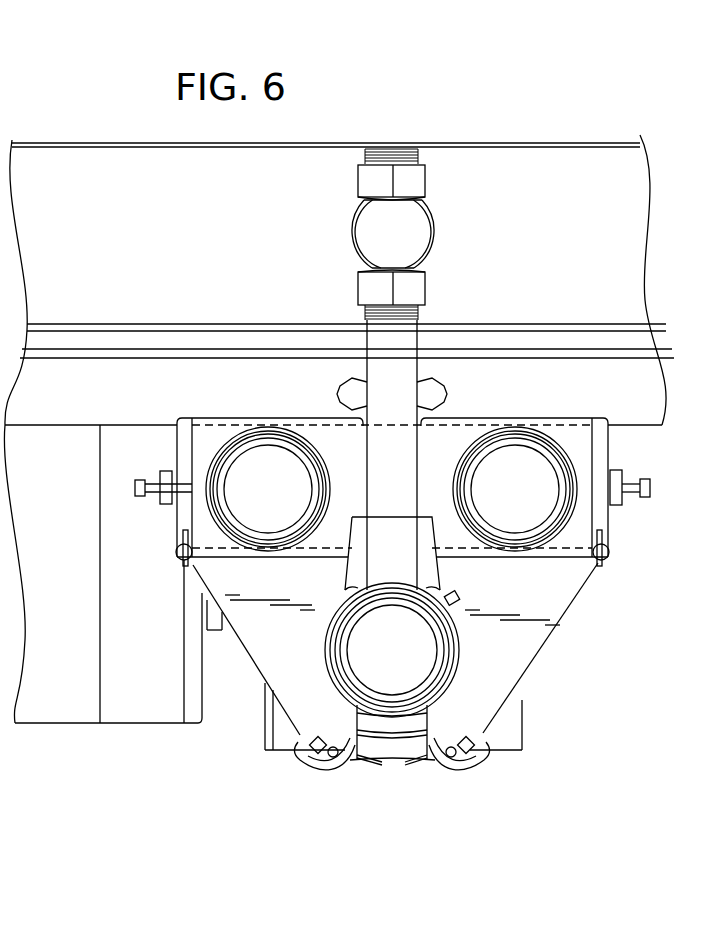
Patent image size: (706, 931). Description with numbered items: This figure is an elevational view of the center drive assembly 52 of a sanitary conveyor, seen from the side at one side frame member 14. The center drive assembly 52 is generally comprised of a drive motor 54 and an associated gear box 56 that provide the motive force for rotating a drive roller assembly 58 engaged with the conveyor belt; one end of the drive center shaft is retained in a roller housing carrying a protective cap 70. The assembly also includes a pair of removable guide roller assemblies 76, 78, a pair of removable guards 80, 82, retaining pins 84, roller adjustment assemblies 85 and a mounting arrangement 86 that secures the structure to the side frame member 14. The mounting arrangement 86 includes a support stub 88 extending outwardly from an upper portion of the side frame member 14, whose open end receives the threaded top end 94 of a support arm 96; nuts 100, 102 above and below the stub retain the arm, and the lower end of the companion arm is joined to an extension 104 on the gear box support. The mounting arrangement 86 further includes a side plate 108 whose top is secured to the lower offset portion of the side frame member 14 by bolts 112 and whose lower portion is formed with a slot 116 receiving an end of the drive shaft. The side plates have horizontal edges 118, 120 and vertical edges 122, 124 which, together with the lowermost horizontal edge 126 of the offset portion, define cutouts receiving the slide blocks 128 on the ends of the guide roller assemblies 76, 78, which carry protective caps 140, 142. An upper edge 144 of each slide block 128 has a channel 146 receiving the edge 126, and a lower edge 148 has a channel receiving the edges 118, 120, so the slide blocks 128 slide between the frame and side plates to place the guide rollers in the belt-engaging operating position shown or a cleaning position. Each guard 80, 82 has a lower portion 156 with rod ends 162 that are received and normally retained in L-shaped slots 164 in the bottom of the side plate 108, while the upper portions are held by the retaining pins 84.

The side frame member 14 is at (612, 237).
The center drive assembly 52 is at (623, 692).
The drive motor 54 is at (140, 718).
The gear box 56 is at (515, 703).
The drive roller assembly 58 is at (413, 652).
The protective cap 70 is at (420, 640).
The guide roller assembly 76 is at (210, 487).
The guide roller assembly 78 is at (585, 483).
The removable guard 80 is at (360, 762).
The removable guard 82 is at (418, 768).
The retaining pin 84 is at (186, 553).
The roller adjustment assembly 85 is at (185, 540).
The mounting arrangement 86 is at (434, 316).
The support stub 88 is at (438, 235).
The threaded top end 94 is at (398, 150).
The support arm 96 is at (398, 388).
The nut 100 is at (373, 284).
The nut 102 is at (418, 181).
The extension 104 is at (396, 553).
The side plate 108 is at (555, 612).
The bolt 112 is at (345, 396).
The slot 116 is at (415, 748).
The horizontal edge 118 is at (225, 560).
The horizontal edge 120 is at (558, 562).
The vertical edge 122 is at (368, 500).
The vertical edge 124 is at (418, 446).
The lowermost horizontal edge 126 is at (640, 427).
The slide block 128 is at (200, 450).
The protective cap 140 is at (268, 489).
The protective cap 142 is at (515, 489).
The upper edge 144 is at (207, 418).
The channel 146 is at (660, 402).
The lower edge 148 is at (210, 570).
The lower portion 156 is at (378, 768).
The rod end 162 is at (320, 757).
The L-shaped slot 164 is at (292, 742).